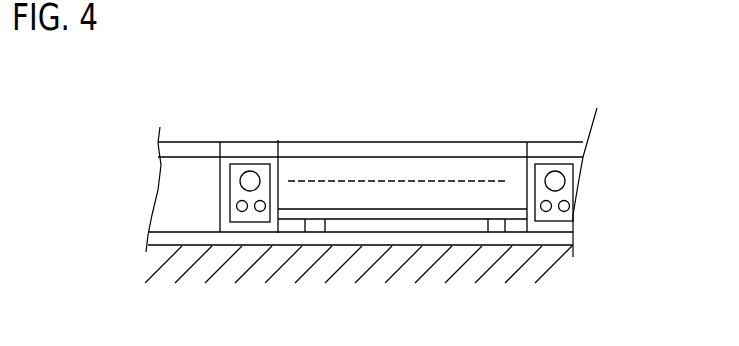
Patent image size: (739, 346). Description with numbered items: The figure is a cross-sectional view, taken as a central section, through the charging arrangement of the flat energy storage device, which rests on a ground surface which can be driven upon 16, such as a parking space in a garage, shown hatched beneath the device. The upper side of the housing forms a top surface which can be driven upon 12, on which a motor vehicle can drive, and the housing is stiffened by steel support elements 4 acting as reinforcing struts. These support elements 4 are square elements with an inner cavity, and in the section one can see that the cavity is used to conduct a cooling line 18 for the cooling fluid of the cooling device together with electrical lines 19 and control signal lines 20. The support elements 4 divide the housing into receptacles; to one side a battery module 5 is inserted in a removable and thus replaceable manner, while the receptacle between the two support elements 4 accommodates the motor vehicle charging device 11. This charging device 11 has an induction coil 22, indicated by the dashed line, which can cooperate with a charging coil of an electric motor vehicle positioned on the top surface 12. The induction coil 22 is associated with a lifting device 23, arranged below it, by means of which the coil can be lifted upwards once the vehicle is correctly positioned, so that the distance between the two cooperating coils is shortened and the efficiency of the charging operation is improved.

The support element 4 is at (223, 158).
The battery module 5 is at (175, 217).
The motor vehicle charging device 11 is at (440, 168).
The top surface which can be driven upon 12 is at (175, 140).
The ground surface which can be driven upon 16 is at (362, 284).
The cooling line 18 is at (248, 170).
The electrical line 19 is at (237, 210).
The control signal line 20 is at (259, 211).
The induction coil 22 is at (370, 180).
The lifting device 23 is at (297, 213).